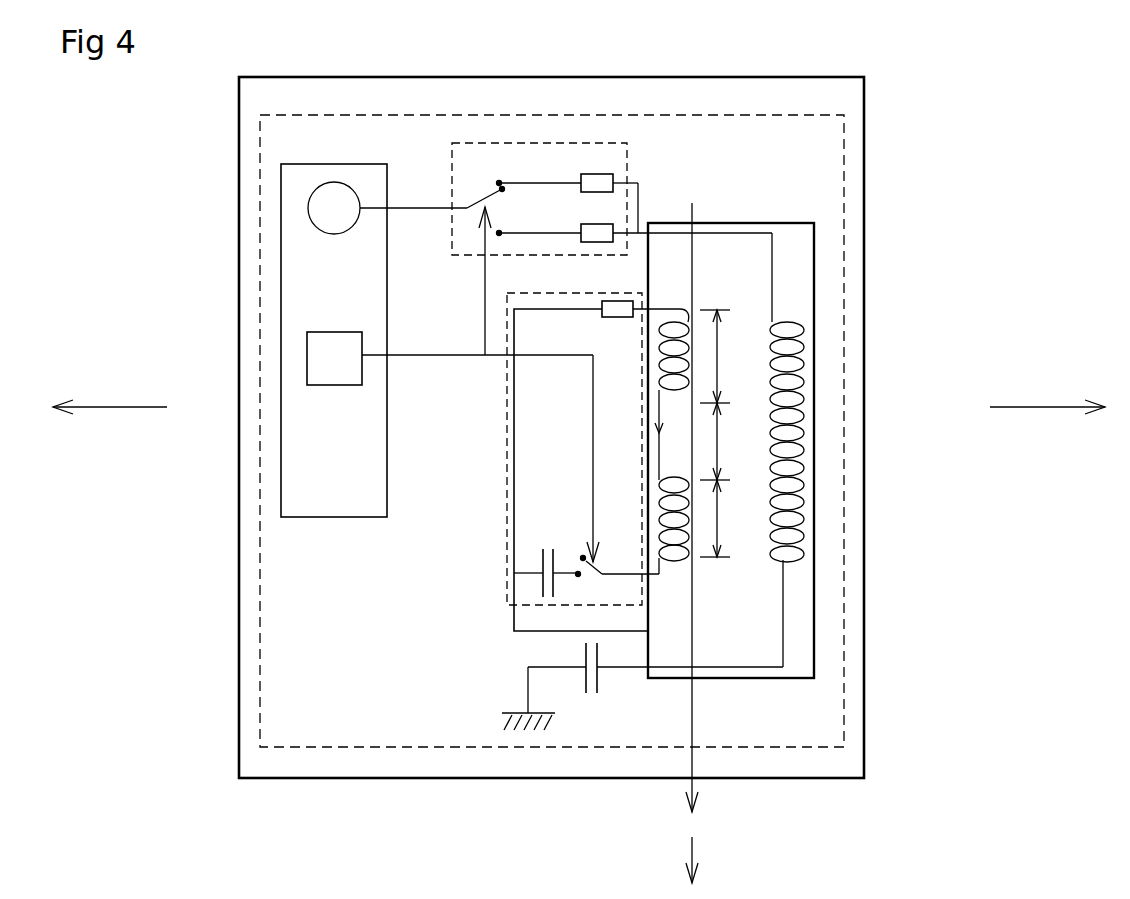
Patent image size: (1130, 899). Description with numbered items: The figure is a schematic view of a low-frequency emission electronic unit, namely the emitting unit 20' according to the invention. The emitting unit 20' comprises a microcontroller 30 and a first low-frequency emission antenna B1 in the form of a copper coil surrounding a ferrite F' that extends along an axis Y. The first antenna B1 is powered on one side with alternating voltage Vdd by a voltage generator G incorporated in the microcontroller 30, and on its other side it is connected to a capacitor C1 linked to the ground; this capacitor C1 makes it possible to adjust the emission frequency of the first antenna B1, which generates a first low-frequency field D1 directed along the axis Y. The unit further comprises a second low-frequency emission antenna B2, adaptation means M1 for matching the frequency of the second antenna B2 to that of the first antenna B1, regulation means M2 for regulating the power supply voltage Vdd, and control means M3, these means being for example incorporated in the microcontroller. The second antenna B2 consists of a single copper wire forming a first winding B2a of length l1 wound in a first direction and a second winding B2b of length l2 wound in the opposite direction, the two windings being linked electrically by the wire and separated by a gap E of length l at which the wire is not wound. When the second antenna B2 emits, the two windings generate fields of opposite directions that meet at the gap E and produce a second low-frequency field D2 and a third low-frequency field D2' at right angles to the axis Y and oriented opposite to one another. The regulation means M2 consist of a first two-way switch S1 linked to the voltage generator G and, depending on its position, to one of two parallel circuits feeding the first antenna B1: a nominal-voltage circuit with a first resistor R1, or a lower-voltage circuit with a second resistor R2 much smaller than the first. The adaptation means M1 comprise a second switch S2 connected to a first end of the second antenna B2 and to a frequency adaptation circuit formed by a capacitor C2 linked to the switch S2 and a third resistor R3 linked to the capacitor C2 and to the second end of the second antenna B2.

The emitting unit 20' is at (605, 427).
The microcontroller 30 is at (320, 163).
The voltage generator G is at (334, 208).
The power supply voltage Vdd is at (447, 281).
The control means M3 is at (335, 387).
The regulation means M2 is at (478, 143).
The first two-way switch S1 is at (484, 203).
The first resistor R1 is at (568, 173).
The second resistor R2 is at (635, 223).
The adaptation means M1 is at (507, 557).
The third resistor R3 is at (640, 324).
The capacitor C2 is at (546, 557).
The second switch S2 is at (618, 556).
The capacitor C1 is at (642, 686).
The ferrite F' is at (796, 450).
The first low-frequency emission antenna B1 is at (803, 322).
The second low-frequency emission antenna B2 is at (829, 446).
The first winding B2a is at (688, 352).
The second winding B2b is at (799, 530).
The gap E is at (690, 451).
The length of the first winding l1 is at (728, 356).
The length of the gap l is at (719, 441).
The length of the second winding l2 is at (728, 518).
The axis Y is at (703, 508).
The first low-frequency field D1 is at (710, 859).
The second low-frequency field D2 is at (1047, 393).
The third low-frequency field D2' is at (110, 393).